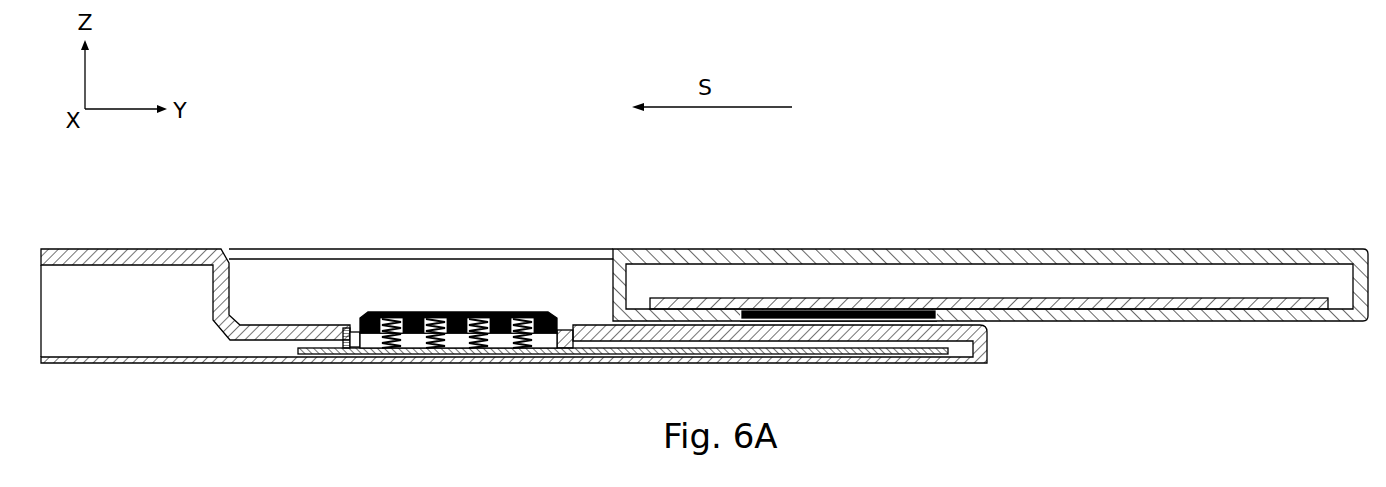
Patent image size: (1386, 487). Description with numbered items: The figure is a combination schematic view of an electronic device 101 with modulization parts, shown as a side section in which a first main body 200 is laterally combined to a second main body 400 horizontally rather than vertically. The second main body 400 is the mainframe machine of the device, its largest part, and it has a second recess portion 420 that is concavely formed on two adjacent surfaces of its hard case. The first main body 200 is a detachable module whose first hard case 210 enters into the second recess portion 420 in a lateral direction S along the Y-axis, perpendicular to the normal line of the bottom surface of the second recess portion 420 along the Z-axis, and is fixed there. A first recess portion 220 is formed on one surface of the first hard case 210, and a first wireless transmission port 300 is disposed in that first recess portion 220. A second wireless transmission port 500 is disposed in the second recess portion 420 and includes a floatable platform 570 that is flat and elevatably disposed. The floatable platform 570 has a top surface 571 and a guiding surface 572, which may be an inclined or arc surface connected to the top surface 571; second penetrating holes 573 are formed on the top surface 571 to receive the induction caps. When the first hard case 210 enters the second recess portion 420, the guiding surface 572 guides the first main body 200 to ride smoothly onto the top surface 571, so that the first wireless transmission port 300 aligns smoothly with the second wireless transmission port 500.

The electronic device 101 is at (1312, 55).
The first main body 200 is at (990, 216).
The first hard case 210 is at (1078, 250).
The first recess portion 220 is at (1100, 167).
The first wireless transmission port 300 is at (885, 318).
The second main body 400 is at (213, 363).
The second recess portion 420 is at (421, 272).
The second wireless transmission port 500 is at (452, 268).
The floatable platform 570 is at (500, 239).
The top surface 571 is at (457, 263).
The guiding surface 572 is at (458, 322).
The second penetrating holes 573 is at (371, 300).